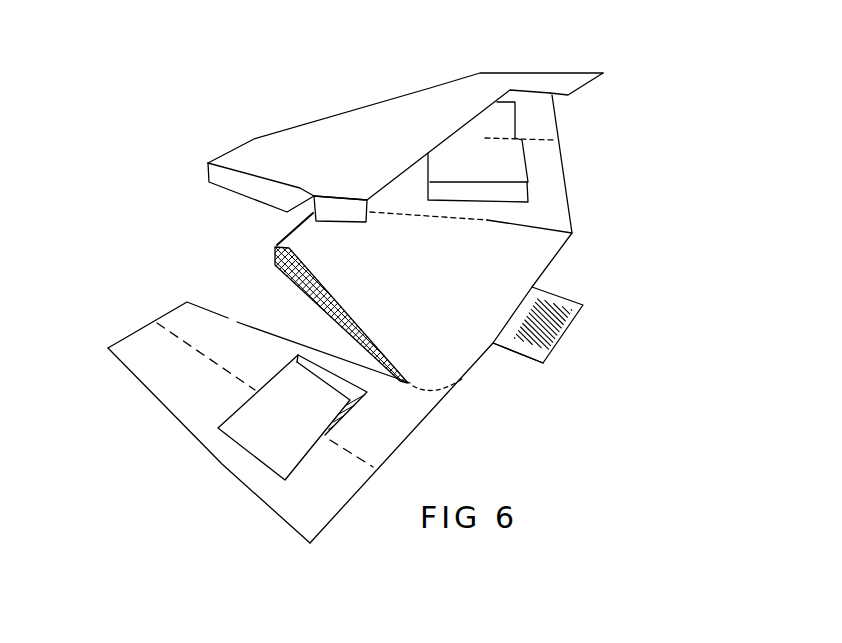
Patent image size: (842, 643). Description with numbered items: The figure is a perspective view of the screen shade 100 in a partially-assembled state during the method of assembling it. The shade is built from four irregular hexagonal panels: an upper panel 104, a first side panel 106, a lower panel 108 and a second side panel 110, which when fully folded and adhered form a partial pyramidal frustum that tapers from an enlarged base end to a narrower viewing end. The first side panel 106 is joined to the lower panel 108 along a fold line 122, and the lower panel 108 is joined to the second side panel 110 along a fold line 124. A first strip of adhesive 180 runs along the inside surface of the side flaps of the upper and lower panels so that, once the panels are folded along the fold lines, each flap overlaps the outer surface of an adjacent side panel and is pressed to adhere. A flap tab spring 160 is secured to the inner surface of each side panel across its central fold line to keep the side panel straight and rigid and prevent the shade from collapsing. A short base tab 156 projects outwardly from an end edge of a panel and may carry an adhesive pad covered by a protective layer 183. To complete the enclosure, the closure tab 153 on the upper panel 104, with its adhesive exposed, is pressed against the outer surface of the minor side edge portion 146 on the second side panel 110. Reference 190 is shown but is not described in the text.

The screen shade 100 is at (252, 97).
The upper panel 104 is at (363, 123).
The first side panel 106 is at (557, 203).
The lower panel 108 is at (294, 237).
The second side panel 110 is at (196, 421).
The fold line 122 is at (516, 226).
The fold line 124 is at (462, 380).
The minor side edge portion 146 is at (292, 533).
The closure tab 153 is at (348, 212).
The base tab 156 is at (553, 354).
The flap tab spring 160 is at (545, 123).
The strip of adhesive 180 is at (293, 283).
The protective layer 183 is at (567, 324).
The panel thickness edge 190 is at (232, 190).